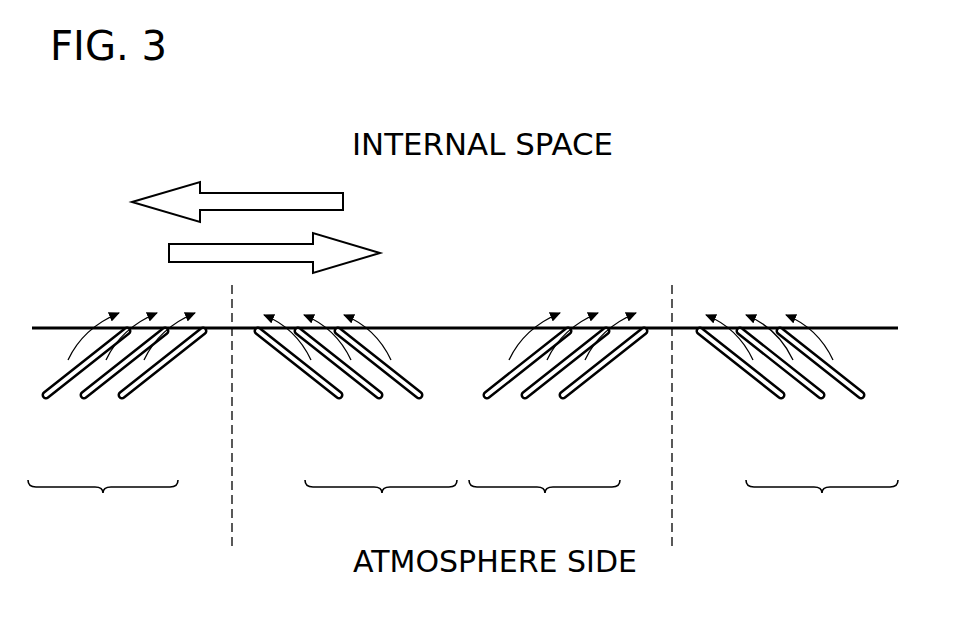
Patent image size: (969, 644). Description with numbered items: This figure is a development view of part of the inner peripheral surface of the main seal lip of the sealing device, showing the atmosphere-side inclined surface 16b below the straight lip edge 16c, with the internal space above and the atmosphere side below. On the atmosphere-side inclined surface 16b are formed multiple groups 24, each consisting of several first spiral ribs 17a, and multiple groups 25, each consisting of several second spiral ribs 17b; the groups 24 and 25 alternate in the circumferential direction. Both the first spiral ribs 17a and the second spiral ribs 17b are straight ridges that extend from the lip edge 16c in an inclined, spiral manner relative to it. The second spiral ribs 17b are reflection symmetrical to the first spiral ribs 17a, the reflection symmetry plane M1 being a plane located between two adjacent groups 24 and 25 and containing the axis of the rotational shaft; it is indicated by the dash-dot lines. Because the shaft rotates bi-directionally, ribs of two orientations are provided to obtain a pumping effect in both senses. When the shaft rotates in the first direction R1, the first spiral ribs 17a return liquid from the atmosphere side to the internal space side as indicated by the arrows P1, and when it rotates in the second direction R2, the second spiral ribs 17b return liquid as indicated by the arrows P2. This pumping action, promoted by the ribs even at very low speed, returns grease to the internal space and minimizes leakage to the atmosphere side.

The atmosphere-side inclined surface 16b is at (637, 375).
The lip edge 16c is at (477, 327).
The first spiral ribs 17a is at (51, 399).
The second spiral ribs 17b is at (335, 399).
The groups of first spiral ribs 24 is at (324, 502).
The groups of second spiral ribs 25 is at (601, 502).
The arrow indicating liquid return by first spiral ribs P1 is at (536, 325).
The arrow indicating liquid return by second spiral ribs P2 is at (363, 325).
The first direction R1 is at (237, 192).
The second direction R2 is at (274, 244).
The reflection symmetry plane M1 is at (232, 538).